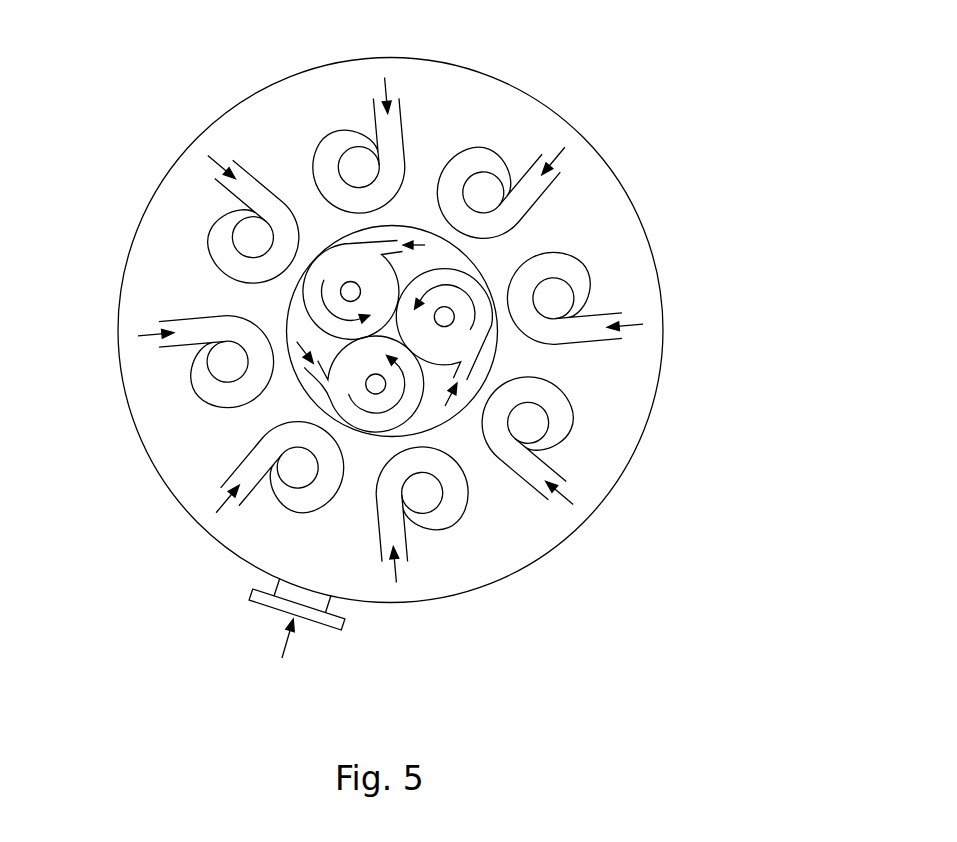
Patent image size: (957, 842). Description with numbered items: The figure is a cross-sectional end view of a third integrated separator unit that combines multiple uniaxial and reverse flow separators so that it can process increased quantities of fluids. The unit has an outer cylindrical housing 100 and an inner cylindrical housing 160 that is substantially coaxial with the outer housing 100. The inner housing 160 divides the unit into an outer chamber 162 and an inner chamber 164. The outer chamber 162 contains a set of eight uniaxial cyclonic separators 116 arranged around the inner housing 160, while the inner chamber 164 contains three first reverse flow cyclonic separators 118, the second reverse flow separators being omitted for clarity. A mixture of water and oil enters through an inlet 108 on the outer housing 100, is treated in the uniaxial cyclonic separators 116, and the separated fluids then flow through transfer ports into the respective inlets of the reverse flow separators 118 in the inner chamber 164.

The outer cylindrical housing 100 is at (663, 314).
The inlet 108 is at (322, 608).
The uniaxial cyclonic separators 116 is at (248, 462).
The first reverse flow cyclonic separators 118 is at (315, 281).
The inner cylindrical housing 160 is at (498, 346).
The outer chamber 162 is at (403, 329).
The inner chamber 164 is at (286, 226).